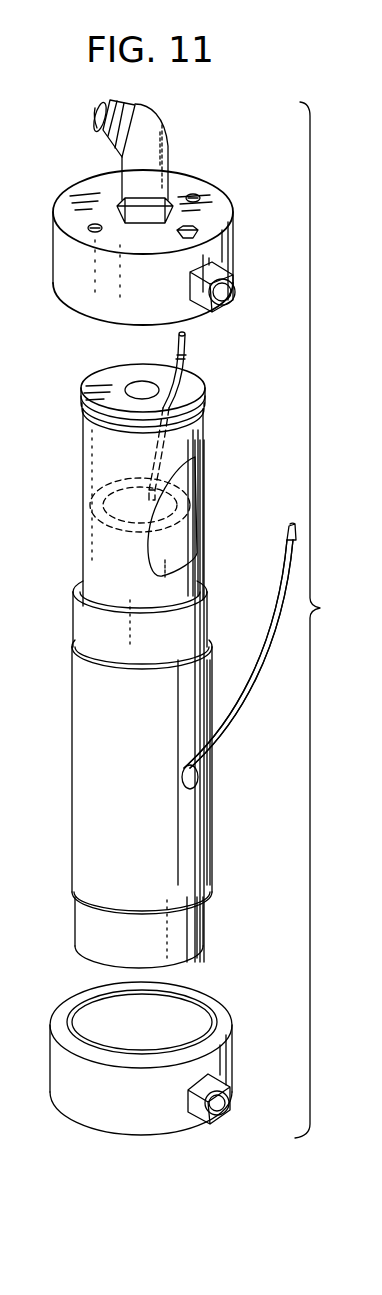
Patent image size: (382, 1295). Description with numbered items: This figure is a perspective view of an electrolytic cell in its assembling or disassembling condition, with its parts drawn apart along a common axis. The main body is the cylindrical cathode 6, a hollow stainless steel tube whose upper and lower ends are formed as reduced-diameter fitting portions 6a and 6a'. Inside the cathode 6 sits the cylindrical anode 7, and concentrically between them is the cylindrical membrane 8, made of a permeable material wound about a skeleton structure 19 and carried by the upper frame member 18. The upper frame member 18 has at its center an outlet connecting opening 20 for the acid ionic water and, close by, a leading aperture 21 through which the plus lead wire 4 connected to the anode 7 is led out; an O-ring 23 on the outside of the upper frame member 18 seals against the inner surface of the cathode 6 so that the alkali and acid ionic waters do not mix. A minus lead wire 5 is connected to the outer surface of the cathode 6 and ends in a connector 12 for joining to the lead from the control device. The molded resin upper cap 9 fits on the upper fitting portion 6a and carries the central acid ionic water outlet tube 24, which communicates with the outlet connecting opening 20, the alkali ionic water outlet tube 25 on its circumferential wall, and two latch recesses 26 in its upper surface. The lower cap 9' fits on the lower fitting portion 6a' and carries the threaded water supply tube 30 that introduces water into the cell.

The plus lead wire 4 is at (192, 375).
The minus lead wire 5 is at (272, 643).
The cylindrical cathode 6 is at (213, 832).
The upper fitting portion 6a is at (125, 625).
The lower fitting portion 6a' is at (168, 932).
The cylindrical anode 7 is at (195, 515).
The cylindrical membrane 8 is at (84, 540).
The upper cap 9 is at (159, 247).
The lower cap 9' is at (160, 1058).
The connector 12 is at (187, 355).
The upper frame member 18 is at (90, 378).
The skeleton structure 19 is at (198, 547).
The outlet connecting opening 20 is at (138, 383).
The leading aperture 21 is at (203, 402).
The O-ring 23 is at (205, 416).
The acid ionic water outlet tube 24 is at (160, 136).
The alkali ionic water outlet tube 25 is at (234, 288).
The latch recesses 26 is at (95, 223).
The water supply tube 30 is at (232, 1095).